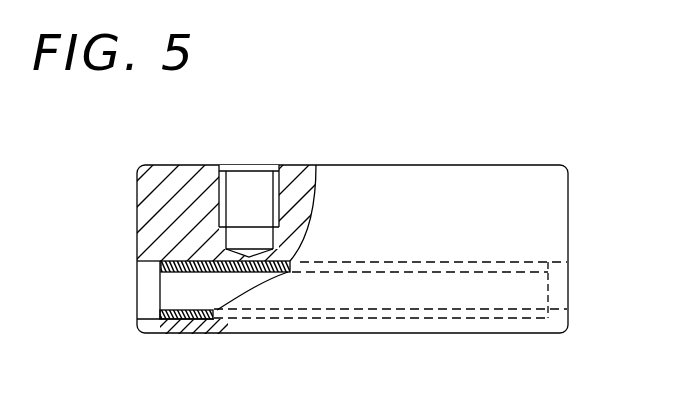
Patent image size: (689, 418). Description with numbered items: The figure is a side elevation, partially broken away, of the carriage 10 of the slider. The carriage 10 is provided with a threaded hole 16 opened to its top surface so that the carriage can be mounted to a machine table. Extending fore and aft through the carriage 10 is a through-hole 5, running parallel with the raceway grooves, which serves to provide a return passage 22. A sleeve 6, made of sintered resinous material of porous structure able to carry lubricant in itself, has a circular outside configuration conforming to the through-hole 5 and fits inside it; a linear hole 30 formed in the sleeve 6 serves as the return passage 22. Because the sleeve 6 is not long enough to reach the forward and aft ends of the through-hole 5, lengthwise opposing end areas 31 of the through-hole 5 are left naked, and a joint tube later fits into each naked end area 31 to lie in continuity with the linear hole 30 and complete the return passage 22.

The carriage 10 is at (397, 183).
The threaded hole 16 is at (260, 185).
The through-hole 5 is at (183, 280).
The sleeve 6 is at (206, 268).
The return passage 22 is at (222, 287).
The linear hole 30 is at (161, 319).
The end area of the through-hole 31 is at (150, 317).